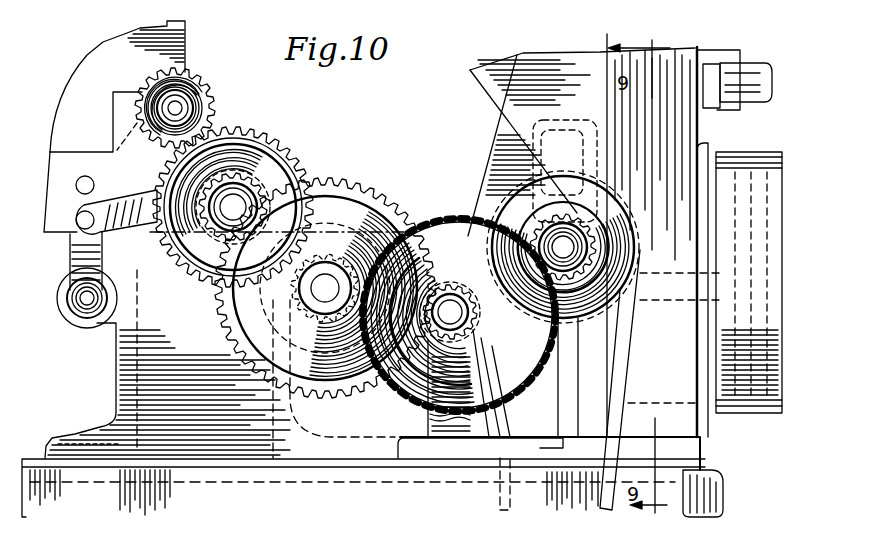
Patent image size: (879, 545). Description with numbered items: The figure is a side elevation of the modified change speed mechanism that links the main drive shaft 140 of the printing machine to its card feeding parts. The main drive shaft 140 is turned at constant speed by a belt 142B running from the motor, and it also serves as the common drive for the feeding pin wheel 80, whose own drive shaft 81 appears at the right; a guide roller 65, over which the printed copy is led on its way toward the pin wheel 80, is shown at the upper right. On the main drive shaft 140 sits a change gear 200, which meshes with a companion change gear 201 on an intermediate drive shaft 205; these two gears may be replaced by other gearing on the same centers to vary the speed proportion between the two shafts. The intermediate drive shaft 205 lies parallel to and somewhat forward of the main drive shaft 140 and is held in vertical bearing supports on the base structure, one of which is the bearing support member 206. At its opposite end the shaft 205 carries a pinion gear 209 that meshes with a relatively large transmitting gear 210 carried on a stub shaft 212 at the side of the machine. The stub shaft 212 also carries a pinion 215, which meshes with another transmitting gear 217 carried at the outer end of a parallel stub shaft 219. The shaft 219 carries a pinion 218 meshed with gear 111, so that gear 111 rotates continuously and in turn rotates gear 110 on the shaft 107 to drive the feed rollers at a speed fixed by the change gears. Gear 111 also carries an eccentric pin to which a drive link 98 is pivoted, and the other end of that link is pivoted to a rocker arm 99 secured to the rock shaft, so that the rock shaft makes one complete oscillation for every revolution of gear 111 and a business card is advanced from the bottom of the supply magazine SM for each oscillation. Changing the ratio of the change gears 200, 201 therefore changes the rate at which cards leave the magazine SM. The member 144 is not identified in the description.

The supply magazine SM is at (88, 86).
The guide roller 65 is at (740, 70).
The feeding pin wheel 80 is at (763, 398).
The drive shaft 81 is at (658, 298).
The drive link 98 is at (120, 218).
The rocker arm 99 is at (82, 250).
The shaft 107 is at (178, 105).
The gear 110 is at (140, 103).
The gear 111 is at (150, 159).
The main drive shaft 140 is at (570, 250).
The belt 142B is at (622, 345).
The support bracket 144 is at (578, 322).
The change gear 200 is at (530, 200).
The change gear 201 is at (385, 395).
The intermediate drive shaft 205 is at (450, 292).
The vertical bearing support member 206 is at (462, 465).
The pinion gear 209 is at (463, 345).
The transmitting gear 210 is at (338, 205).
The stub shaft 212 is at (327, 306).
The pinion 215 is at (250, 352).
The transmitting gear 217 is at (276, 162).
The pinion 218 is at (255, 132).
The stub shaft 219 is at (229, 212).